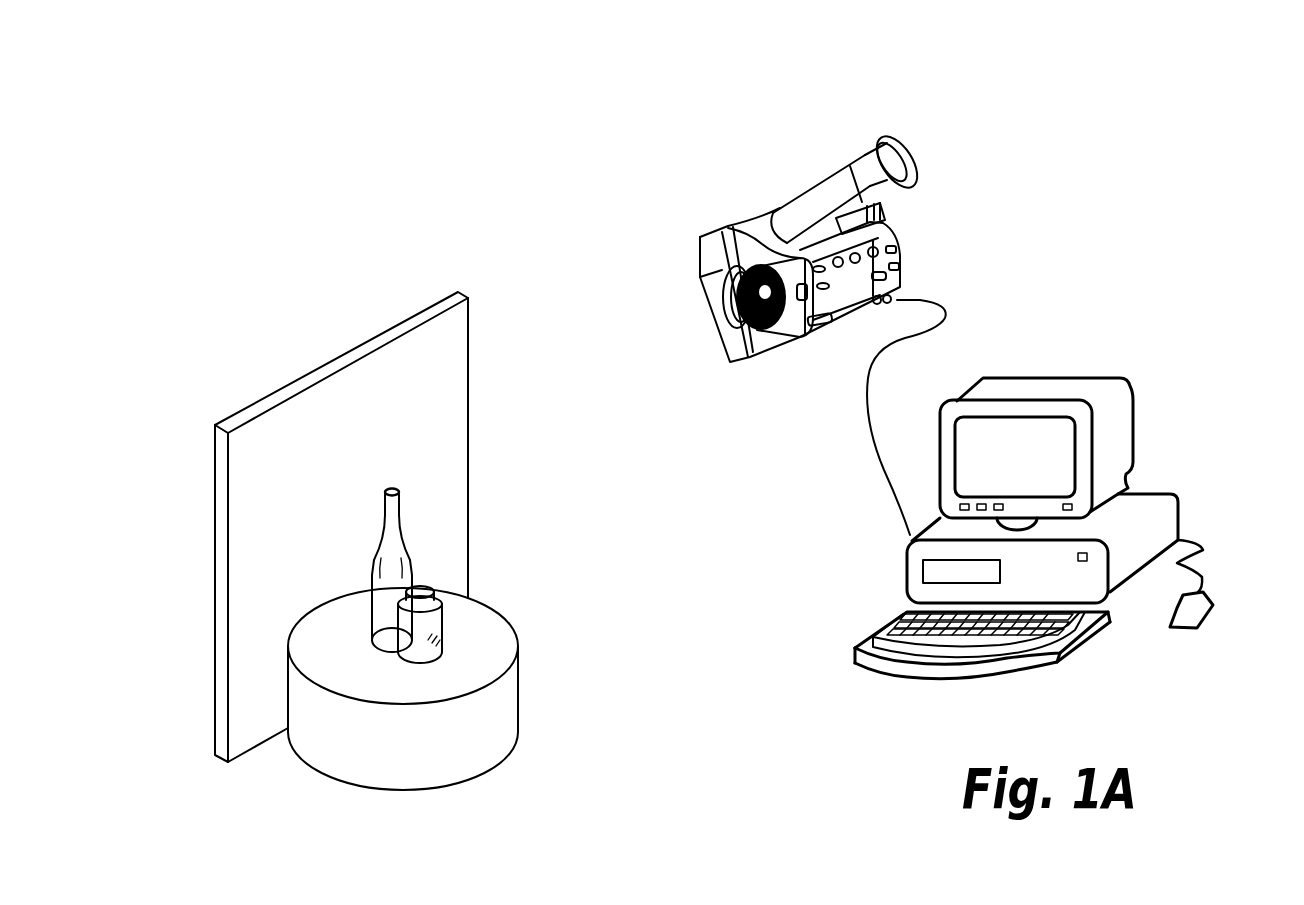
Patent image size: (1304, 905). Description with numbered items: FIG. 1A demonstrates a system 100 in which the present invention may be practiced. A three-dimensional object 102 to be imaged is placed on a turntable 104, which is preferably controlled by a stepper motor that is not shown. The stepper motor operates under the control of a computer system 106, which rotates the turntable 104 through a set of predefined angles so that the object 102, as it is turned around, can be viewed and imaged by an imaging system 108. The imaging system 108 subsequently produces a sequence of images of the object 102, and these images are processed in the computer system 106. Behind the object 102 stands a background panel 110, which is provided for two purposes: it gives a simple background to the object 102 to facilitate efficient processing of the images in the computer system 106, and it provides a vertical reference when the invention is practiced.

The system 100 is at (1063, 163).
The 3D object 102 is at (393, 543).
The turntable 104 is at (502, 730).
The computer system 106 is at (1148, 476).
The imaging system 108 is at (742, 226).
The background panel 110 is at (318, 393).